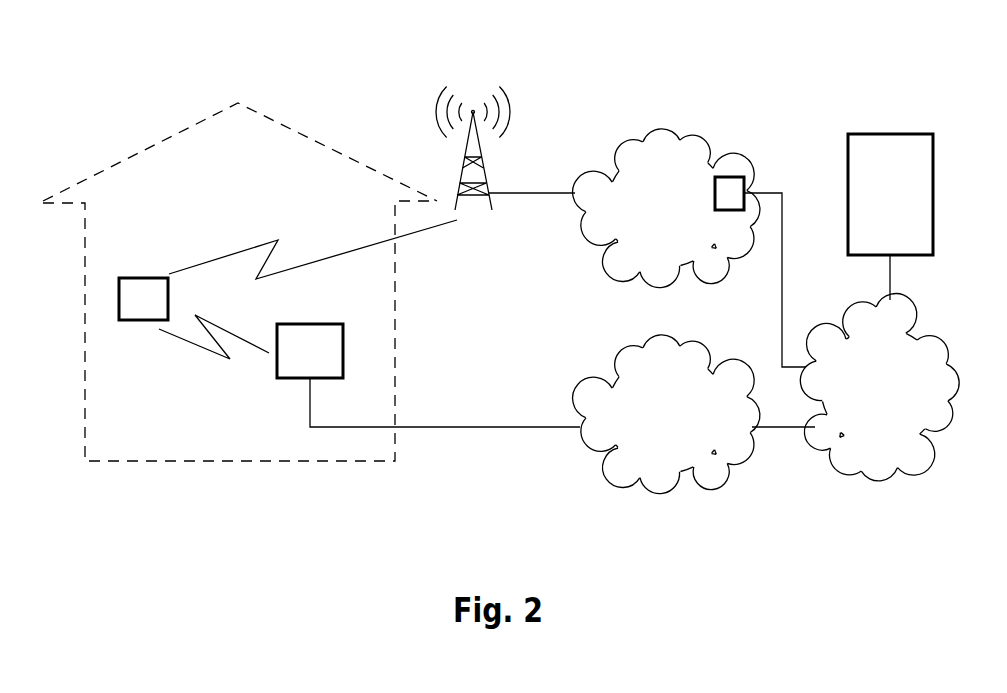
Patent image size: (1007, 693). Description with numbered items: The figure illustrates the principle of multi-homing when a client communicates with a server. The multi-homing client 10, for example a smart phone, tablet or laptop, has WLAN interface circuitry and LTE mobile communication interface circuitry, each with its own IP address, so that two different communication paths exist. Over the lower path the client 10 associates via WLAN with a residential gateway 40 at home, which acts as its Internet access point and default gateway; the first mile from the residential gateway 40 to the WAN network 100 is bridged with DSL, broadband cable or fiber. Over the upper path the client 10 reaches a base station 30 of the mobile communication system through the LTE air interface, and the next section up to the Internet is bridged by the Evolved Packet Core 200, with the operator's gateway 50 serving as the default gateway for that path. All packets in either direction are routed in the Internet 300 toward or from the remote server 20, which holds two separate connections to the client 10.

The multi-homing client 10 is at (143, 278).
The remote server 20 is at (880, 134).
The base station 30 is at (483, 163).
The residential gateway 40 is at (295, 367).
The gateway 50 is at (731, 177).
The WAN network 100 is at (615, 480).
The Evolved Packet Core 200 is at (685, 145).
The Internet 300 is at (863, 477).